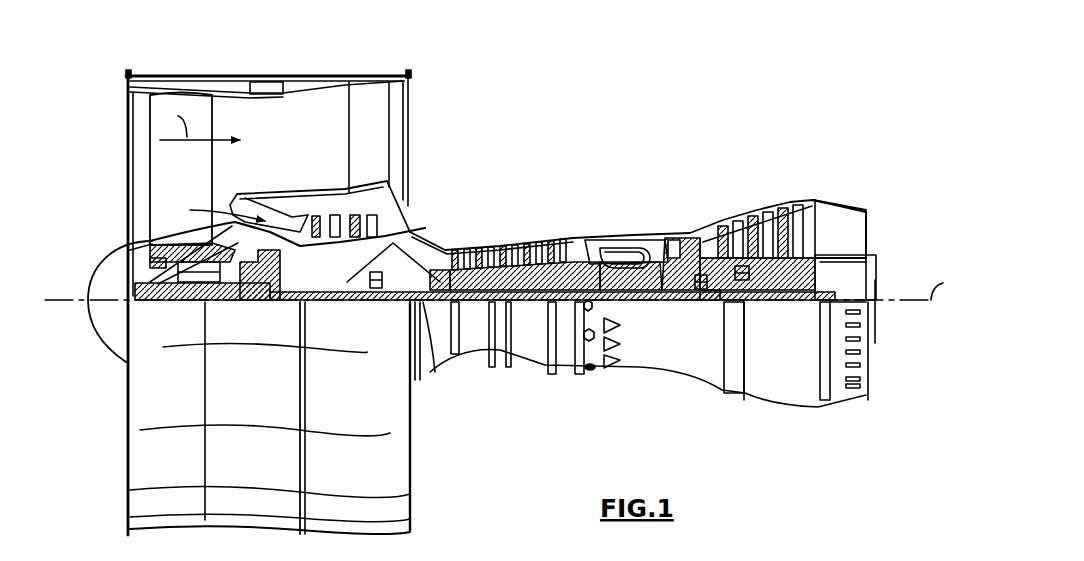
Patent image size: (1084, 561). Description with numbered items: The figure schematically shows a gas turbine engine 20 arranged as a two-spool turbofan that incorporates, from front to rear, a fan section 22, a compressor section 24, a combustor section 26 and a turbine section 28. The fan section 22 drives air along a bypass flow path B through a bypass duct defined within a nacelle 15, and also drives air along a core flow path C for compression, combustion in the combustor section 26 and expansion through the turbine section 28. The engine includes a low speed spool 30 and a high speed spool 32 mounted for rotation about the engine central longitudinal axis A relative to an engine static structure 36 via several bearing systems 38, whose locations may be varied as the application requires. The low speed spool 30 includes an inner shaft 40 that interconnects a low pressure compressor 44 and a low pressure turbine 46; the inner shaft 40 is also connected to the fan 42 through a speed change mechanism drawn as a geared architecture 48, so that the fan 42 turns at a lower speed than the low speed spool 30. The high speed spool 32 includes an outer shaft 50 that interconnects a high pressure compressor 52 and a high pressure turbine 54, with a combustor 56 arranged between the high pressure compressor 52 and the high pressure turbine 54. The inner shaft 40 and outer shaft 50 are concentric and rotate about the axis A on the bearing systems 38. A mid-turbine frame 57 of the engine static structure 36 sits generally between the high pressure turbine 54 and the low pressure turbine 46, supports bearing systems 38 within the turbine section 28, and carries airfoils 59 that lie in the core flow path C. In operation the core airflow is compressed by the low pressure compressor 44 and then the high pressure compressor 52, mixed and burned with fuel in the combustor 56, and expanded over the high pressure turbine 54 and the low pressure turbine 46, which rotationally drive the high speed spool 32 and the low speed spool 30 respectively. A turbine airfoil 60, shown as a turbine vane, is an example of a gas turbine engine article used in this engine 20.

The nacelle 15 is at (267, 82).
The gas turbine engine 20 is at (630, 117).
The fan section 22 is at (213, 73).
The compressor section 24 is at (449, 225).
The combustor section 26 is at (622, 222).
The turbine section 28 is at (748, 184).
The low speed spool 30 is at (531, 306).
The high speed spool 32 is at (570, 257).
The engine static structure 36 is at (565, 366).
The bearing systems 38 is at (371, 301).
The inner shaft 40 is at (434, 360).
The fan 42 is at (195, 169).
The low pressure compressor 44 is at (350, 222).
The low pressure turbine 46 is at (772, 200).
The geared architecture 48 is at (269, 301).
The outer shaft 50 is at (632, 302).
The high pressure compressor 52 is at (517, 248).
The high pressure turbine 54 is at (674, 240).
The combustor 56 is at (624, 238).
The mid-turbine frame 57 is at (708, 227).
The airfoils 59 is at (738, 276).
The turbine airfoil 60 is at (720, 232).